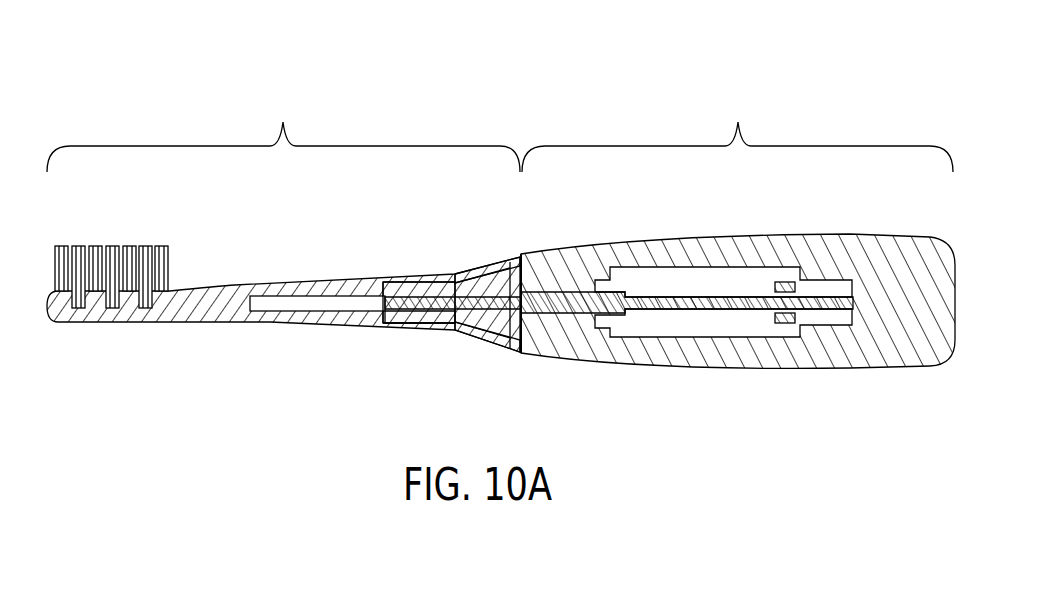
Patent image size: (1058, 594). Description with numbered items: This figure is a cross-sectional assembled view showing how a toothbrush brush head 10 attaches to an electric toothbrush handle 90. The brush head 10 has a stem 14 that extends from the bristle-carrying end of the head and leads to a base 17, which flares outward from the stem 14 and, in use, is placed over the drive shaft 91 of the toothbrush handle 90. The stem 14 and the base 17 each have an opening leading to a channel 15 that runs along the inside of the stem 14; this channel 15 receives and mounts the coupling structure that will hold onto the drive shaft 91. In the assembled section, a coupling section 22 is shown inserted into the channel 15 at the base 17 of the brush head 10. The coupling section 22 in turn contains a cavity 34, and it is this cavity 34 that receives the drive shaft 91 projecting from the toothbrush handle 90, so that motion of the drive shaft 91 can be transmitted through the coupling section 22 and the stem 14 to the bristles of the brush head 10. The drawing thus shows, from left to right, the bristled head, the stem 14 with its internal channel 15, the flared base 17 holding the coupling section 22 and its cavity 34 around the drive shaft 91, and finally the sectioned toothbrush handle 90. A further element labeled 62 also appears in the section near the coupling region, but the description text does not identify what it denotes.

The brush head 10 is at (283, 130).
The stem 14 is at (235, 285).
The channel 15 is at (350, 312).
The base 17 is at (465, 272).
The coupling section 22 is at (423, 278).
The cavity 34 is at (470, 330).
The shaft bearing 62 is at (412, 315).
The toothbrush handle 90 is at (670, 228).
The drive shaft 91 is at (512, 348).